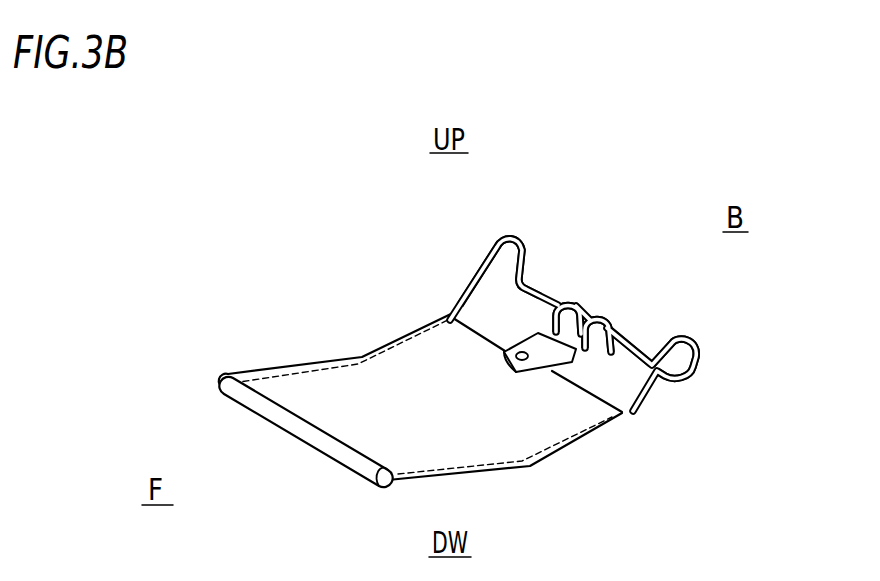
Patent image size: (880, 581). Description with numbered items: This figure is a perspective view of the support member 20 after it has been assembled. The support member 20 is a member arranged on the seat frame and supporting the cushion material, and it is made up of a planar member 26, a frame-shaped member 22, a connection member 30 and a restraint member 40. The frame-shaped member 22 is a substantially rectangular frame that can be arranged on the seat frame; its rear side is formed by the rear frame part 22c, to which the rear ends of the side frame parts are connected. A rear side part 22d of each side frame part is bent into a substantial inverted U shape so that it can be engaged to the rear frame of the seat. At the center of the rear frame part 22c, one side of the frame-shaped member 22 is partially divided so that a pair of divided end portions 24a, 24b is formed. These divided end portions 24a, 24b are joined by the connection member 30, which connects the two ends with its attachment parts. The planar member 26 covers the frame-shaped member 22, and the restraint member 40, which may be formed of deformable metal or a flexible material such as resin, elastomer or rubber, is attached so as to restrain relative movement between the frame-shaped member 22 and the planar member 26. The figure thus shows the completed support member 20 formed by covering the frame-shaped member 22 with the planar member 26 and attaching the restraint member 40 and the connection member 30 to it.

The support member 20 is at (585, 211).
The frame-shaped member 22 is at (597, 337).
The rear frame part 22c is at (641, 352).
The rear side part 22d is at (489, 243).
The divided end portion 24a is at (564, 306).
The divided end portion 24b is at (601, 326).
The planar member 26 is at (357, 348).
The connection member 30 is at (519, 336).
The restraint member 40 is at (299, 440).